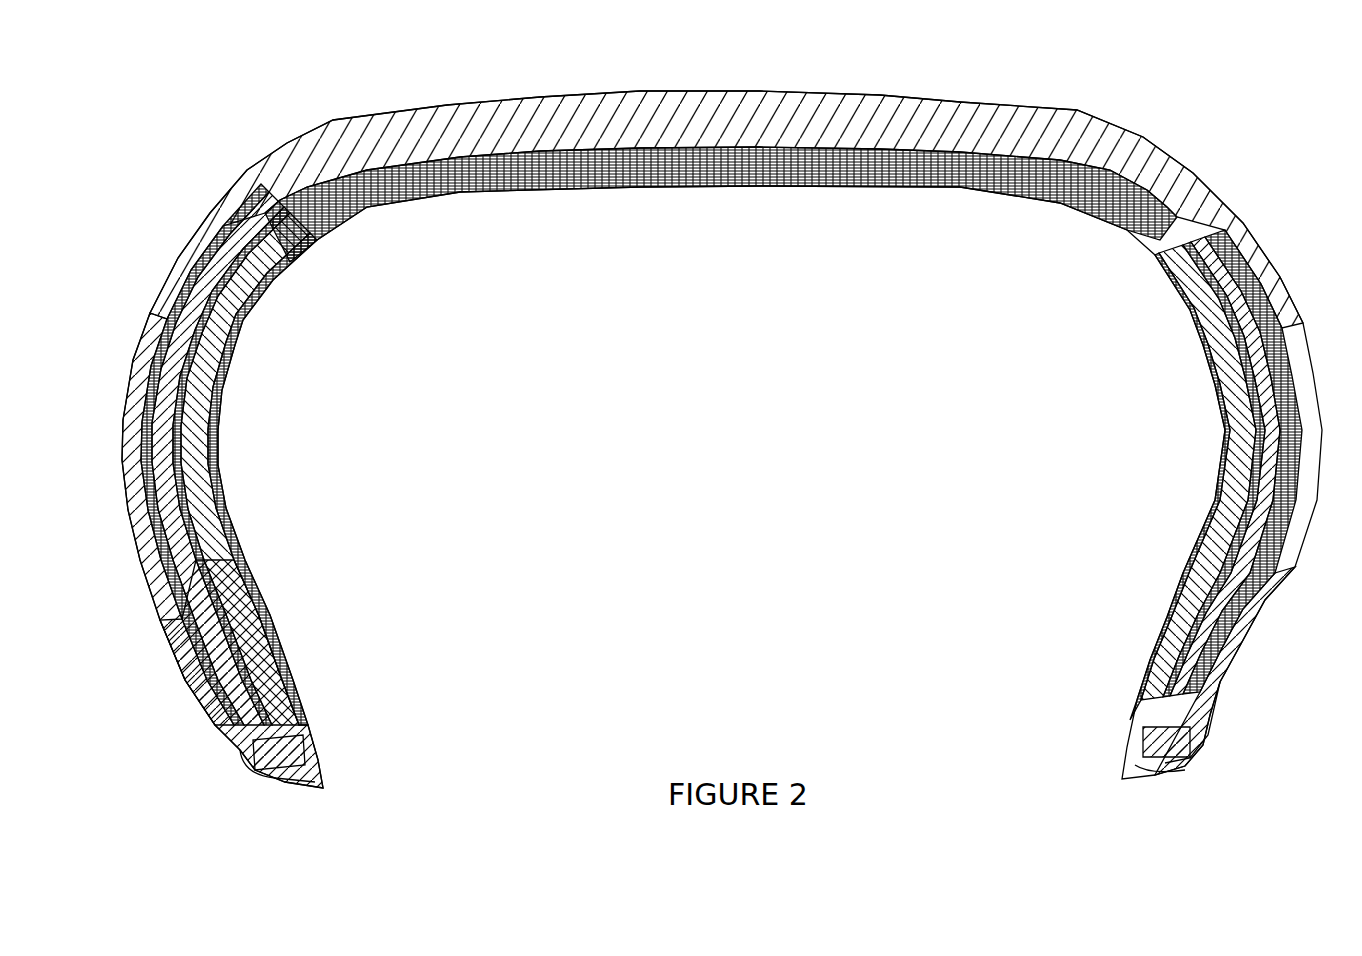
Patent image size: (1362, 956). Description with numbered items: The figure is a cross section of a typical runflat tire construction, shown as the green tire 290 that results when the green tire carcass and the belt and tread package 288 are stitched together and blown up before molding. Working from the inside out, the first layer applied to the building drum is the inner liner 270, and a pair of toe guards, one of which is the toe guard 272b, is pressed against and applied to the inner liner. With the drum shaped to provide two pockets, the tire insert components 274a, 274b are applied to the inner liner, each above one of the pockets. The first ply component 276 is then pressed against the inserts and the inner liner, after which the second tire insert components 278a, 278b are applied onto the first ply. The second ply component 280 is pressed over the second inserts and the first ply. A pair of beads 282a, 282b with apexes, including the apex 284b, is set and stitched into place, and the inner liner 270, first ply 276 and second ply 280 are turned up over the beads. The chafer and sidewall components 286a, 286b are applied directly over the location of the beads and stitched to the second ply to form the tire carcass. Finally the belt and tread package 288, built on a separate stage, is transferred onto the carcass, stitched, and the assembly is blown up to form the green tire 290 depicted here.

The belt and tread package 288 is at (674, 86).
The second ply component 280 is at (170, 287).
The inner liner 270 is at (276, 282).
The first ply component 276 is at (177, 370).
The tire insert component 274a is at (198, 425).
The tire insert component 274b is at (1237, 470).
The second tire insert component 278a is at (167, 503).
The second tire insert component 278b is at (1277, 383).
The bead 282a is at (257, 767).
The bead 282b is at (1177, 752).
The apex 284b is at (1207, 652).
The chafer and sidewall component 286a is at (230, 708).
The chafer and sidewall component 286b is at (1220, 688).
The toe guard 272b is at (1130, 720).
The green tire 290 is at (610, 222).